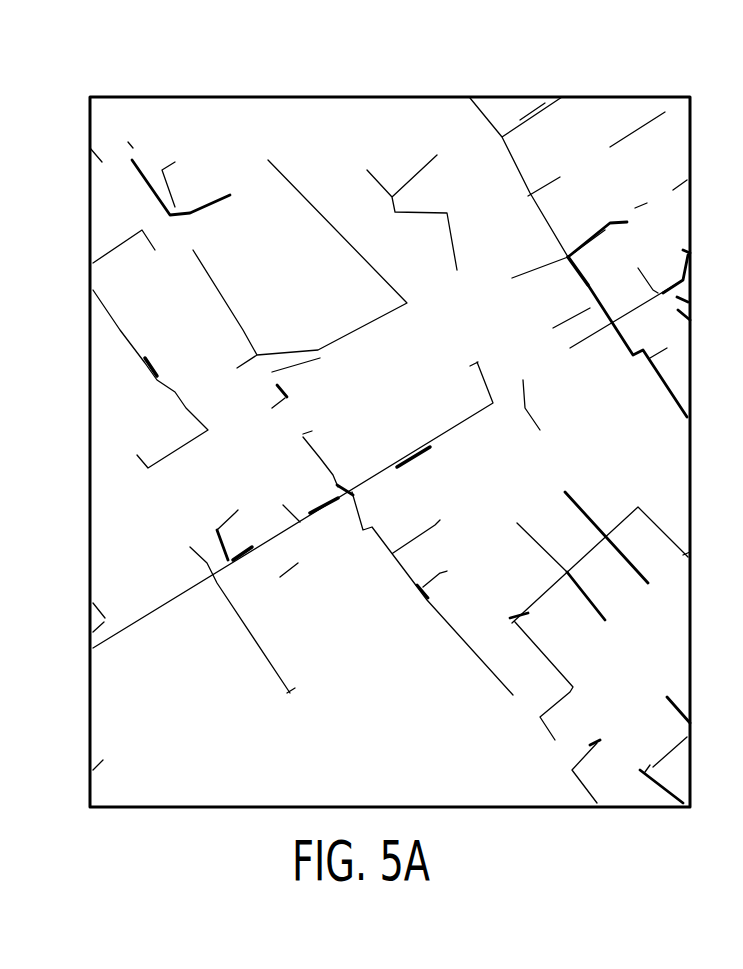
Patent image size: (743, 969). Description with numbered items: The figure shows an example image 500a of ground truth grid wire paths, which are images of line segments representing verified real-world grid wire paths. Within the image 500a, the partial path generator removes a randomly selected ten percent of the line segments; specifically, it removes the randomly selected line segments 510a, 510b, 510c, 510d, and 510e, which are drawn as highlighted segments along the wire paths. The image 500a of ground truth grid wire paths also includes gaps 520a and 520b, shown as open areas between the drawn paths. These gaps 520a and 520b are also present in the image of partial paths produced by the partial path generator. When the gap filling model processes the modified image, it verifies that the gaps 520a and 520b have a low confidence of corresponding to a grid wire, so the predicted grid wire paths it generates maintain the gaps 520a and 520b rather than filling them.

The image of ground truth grid wire paths 500a is at (199, 66).
The randomly selected line segment 510a is at (160, 362).
The randomly selected line segment 510b is at (240, 568).
The randomly selected line segment 510c is at (326, 522).
The randomly selected line segment 510d is at (430, 462).
The randomly selected line segment 510e is at (570, 281).
The gap 520a is at (595, 172).
The gap 520b is at (523, 714).